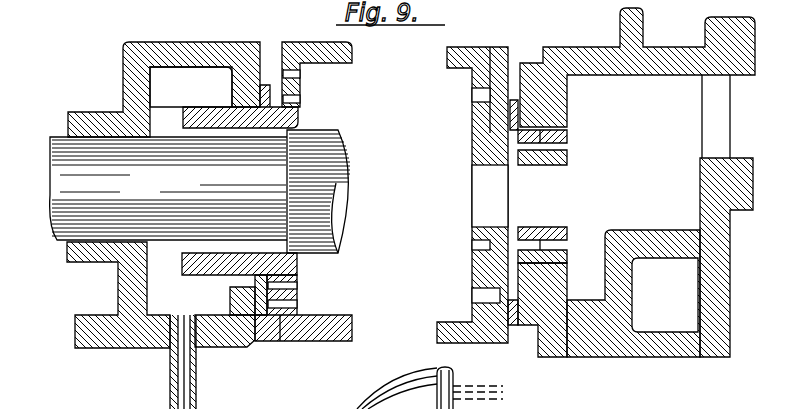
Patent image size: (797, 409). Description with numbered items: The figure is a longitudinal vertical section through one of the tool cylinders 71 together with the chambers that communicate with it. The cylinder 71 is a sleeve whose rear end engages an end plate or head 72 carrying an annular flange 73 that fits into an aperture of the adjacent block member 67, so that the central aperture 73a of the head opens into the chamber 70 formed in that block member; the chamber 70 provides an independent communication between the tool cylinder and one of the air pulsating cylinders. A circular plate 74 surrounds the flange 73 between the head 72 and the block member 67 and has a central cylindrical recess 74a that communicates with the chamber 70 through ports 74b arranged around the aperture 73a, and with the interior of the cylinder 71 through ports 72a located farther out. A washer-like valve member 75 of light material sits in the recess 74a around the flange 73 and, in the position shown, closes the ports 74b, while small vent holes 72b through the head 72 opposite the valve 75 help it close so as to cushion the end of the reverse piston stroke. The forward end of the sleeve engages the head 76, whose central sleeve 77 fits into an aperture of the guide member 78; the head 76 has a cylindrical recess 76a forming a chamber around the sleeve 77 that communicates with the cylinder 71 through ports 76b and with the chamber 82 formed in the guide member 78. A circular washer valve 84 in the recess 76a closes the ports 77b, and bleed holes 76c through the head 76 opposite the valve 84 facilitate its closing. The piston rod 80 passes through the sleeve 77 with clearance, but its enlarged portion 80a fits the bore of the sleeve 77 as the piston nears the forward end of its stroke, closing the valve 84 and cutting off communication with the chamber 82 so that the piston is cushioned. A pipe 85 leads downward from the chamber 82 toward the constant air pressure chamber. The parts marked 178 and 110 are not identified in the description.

The housing 178 is at (124, 58).
The chamber 82 is at (197, 80).
The valve member 84 is at (268, 104).
The bleed holes 76c is at (300, 92).
The piston rod 80 is at (70, 210).
The enlarged part of piston rod 80a is at (330, 162).
The sleeve 77 is at (199, 275).
The ports 77b is at (233, 297).
The cylindrical recess 76a is at (262, 316).
The end wall or head 76 is at (291, 272).
The ports 76b is at (288, 306).
The guide member 78 is at (222, 347).
The pipes 85 is at (170, 362).
The tube 110 is at (401, 388).
The end plate or head 72 is at (478, 276).
The ports 72a is at (482, 93).
The vent holes 72b is at (472, 257).
The central aperture 73a is at (482, 187).
The annular flange 73 is at (567, 160).
The valve member 75 is at (513, 122).
The ports 74b is at (553, 135).
The circular plate 74 is at (530, 325).
The central cylindrical recess 74a is at (510, 327).
The chamber 70 is at (646, 160).
The block member 67 is at (660, 355).
The tool cylinder 71 is at (398, 204).